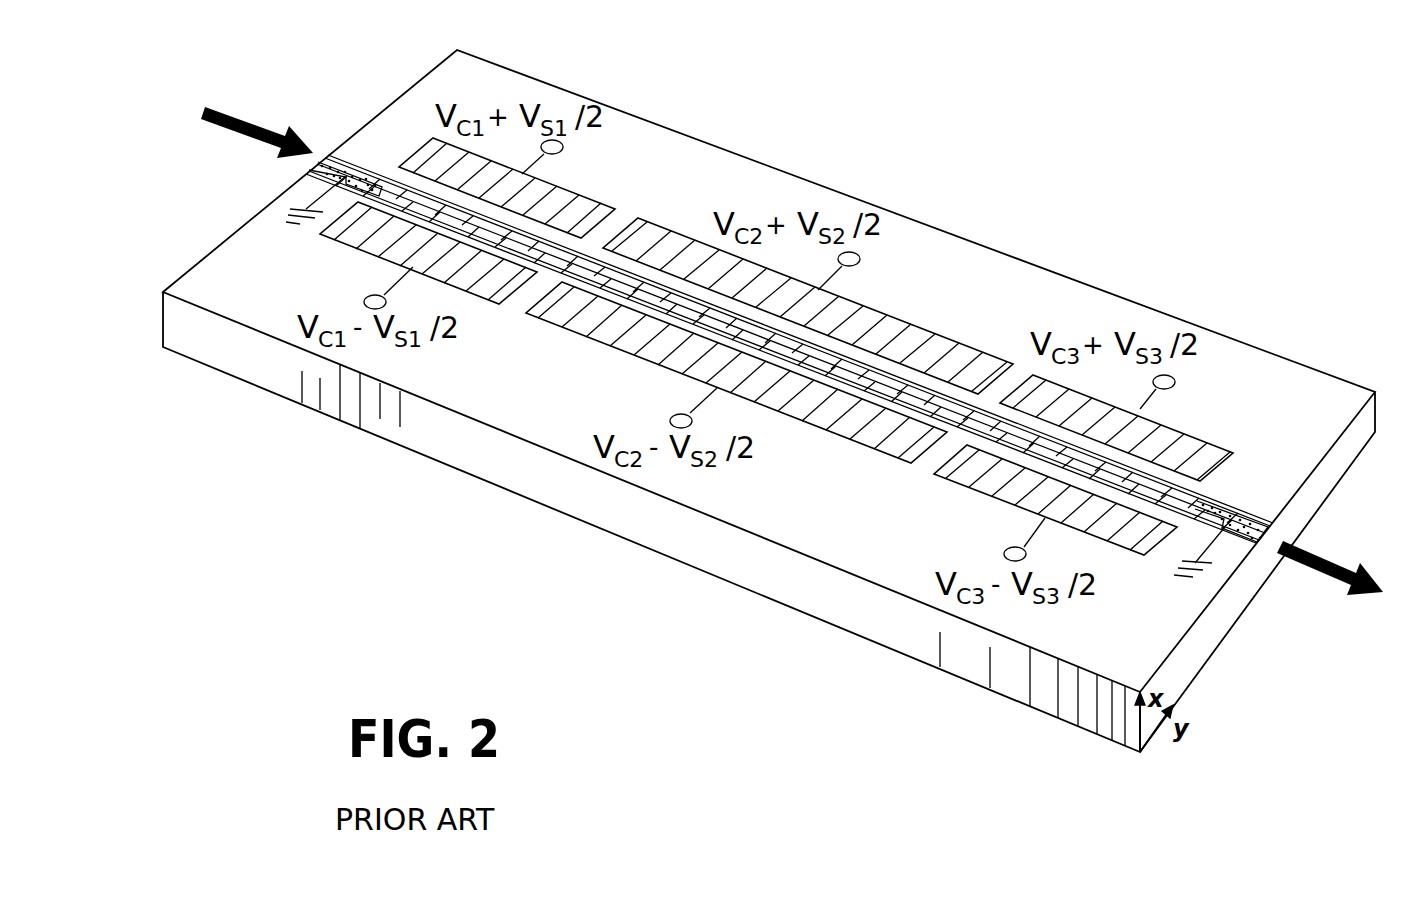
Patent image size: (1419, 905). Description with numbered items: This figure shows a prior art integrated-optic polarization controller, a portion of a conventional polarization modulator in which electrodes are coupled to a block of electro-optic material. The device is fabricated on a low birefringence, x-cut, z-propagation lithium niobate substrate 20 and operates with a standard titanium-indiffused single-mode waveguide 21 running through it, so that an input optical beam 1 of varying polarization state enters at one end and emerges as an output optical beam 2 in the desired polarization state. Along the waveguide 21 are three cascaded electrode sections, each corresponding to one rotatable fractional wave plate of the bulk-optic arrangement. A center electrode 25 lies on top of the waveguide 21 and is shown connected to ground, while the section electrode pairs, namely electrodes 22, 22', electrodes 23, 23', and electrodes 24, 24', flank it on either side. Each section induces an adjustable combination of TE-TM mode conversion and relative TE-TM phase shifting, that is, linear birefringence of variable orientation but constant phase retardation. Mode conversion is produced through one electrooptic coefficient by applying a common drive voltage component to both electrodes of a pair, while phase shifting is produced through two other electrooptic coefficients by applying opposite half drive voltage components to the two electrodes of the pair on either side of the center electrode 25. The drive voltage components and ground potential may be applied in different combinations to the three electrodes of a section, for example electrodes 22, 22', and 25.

The input optical beam 1 is at (243, 133).
The output optical beam 2 is at (1312, 577).
The substrate 20 is at (975, 657).
The waveguide 21 is at (1266, 530).
The electrode 22 is at (557, 155).
The electrode 22' is at (356, 326).
The electrode 23 is at (808, 245).
The electrode 23' is at (670, 406).
The electrode 24 is at (1159, 392).
The electrode 24' is at (987, 565).
The center electrode 25 is at (390, 198).